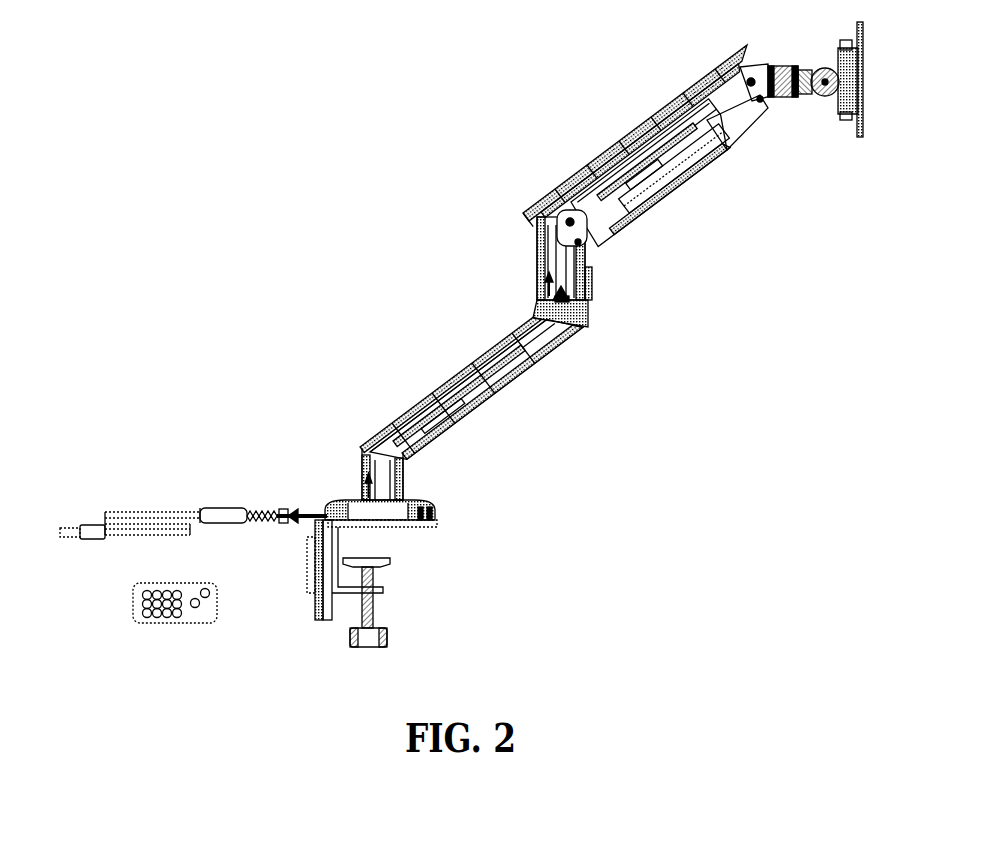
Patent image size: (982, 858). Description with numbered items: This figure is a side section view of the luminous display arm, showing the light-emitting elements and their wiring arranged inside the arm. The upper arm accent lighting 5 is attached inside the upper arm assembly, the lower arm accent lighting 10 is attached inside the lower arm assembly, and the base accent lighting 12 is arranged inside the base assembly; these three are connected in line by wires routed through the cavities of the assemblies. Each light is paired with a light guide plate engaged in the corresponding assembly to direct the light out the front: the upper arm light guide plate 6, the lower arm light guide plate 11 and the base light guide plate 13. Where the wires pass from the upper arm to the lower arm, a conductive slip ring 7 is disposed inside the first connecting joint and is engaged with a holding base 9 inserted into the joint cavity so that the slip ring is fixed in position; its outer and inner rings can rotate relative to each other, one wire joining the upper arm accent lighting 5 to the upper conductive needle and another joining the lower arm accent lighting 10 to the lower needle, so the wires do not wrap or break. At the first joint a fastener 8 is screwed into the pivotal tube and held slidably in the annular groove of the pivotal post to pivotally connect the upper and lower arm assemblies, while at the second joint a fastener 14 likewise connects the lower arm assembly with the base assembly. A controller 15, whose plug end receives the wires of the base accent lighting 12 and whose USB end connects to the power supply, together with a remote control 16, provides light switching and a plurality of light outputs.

The upper arm accent lighting 5 is at (535, 215).
The upper arm light guide plate 6 is at (542, 243).
The conductive slip ring 7 is at (548, 262).
The fastener 8 is at (548, 278).
The holding base 9 is at (555, 297).
The lower arm accent lighting 10 is at (513, 327).
The lower arm light guide plate 11 is at (473, 361).
The base accent lighting 12 is at (433, 510).
The base light guide plate 13 is at (430, 521).
The fastener 14 is at (367, 490).
The controller 15 is at (160, 512).
The remote control 16 is at (137, 583).